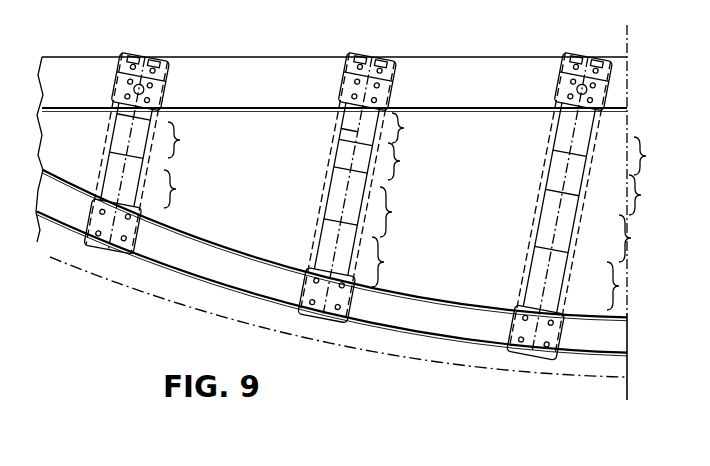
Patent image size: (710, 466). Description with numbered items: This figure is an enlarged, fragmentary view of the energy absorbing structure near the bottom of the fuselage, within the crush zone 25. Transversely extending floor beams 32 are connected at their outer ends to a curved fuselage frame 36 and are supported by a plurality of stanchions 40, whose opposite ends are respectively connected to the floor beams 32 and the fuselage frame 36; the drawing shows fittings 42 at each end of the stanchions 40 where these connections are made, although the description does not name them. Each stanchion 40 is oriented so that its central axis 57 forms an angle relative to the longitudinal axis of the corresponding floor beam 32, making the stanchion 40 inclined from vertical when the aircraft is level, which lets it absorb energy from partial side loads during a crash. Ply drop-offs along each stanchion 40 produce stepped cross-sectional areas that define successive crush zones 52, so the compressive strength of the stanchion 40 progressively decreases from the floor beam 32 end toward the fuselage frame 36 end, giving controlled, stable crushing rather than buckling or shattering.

The crush zone 25 is at (262, 203).
The floor beam 32 is at (485, 80).
The fuselage frame 36 is at (233, 274).
The stanchion 40 is at (120, 135).
The mounting plate 42 is at (167, 72).
The crush zone 52 is at (417, 211).
The central axis 57 is at (358, 132).